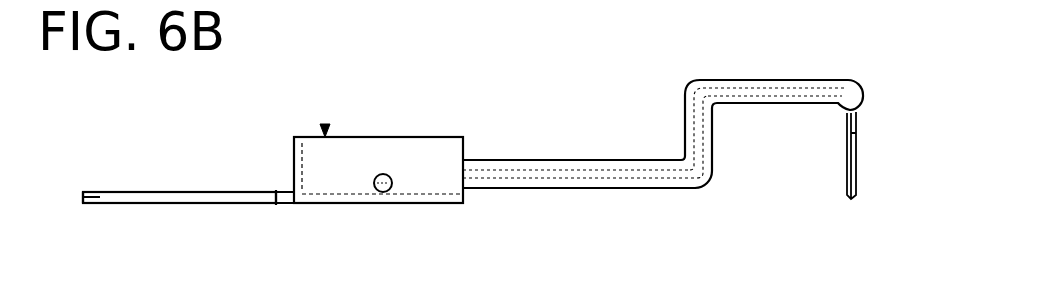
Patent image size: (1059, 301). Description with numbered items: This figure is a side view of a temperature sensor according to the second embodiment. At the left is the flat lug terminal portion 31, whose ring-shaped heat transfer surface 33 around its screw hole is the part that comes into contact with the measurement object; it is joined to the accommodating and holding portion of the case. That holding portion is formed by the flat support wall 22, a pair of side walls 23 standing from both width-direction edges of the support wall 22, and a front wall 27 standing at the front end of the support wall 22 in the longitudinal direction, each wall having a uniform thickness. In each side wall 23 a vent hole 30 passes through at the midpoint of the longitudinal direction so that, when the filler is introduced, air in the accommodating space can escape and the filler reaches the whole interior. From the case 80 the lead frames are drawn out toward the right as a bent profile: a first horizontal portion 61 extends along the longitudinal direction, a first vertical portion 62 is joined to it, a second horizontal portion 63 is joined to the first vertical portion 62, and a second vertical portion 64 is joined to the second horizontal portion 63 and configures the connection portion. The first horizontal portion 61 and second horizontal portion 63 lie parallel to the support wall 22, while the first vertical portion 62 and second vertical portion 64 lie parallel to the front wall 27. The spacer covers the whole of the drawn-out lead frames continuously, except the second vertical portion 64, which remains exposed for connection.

The support wall 22 is at (390, 203).
The side wall 23 is at (386, 137).
The front wall 27 is at (294, 172).
The vent hole 30 is at (375, 189).
The lug terminal portion 31 is at (195, 204).
The heat transfer surface 33 is at (98, 204).
The first horizontal portion 61 is at (595, 178).
The first vertical portion 62 is at (722, 148).
The second horizontal portion 63 is at (787, 97).
The second vertical portion 64 is at (857, 158).
The case 80 is at (325, 124).